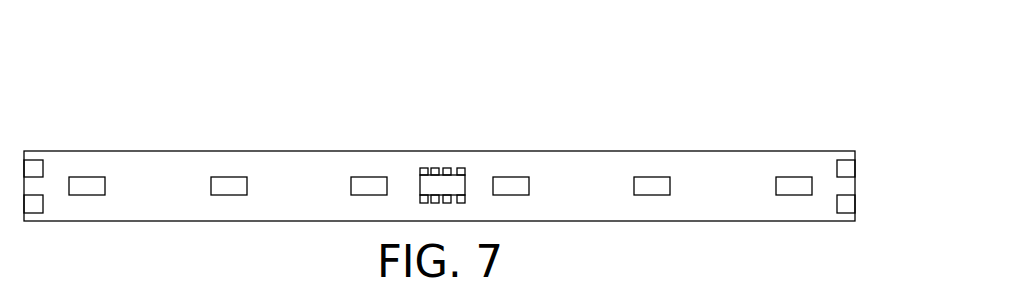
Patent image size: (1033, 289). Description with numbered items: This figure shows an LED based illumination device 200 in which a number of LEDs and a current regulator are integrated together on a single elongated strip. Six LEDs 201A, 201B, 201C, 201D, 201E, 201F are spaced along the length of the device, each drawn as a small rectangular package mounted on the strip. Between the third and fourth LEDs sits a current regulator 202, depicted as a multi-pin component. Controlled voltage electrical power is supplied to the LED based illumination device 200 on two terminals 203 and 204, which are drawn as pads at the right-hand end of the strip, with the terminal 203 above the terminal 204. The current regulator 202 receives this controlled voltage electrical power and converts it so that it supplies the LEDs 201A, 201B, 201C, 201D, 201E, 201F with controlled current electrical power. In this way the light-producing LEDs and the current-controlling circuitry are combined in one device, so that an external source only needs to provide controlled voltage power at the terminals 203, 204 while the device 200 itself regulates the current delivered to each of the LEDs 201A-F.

The LED based illumination device 200 is at (755, 68).
The LED 201A is at (88, 177).
The LED 201B is at (228, 177).
The LED 201C is at (371, 177).
The LED 201D is at (512, 177).
The LED 201E is at (652, 177).
The LED 201F is at (793, 177).
The current regulator 202 is at (440, 187).
The terminal 203 is at (845, 169).
The terminal 204 is at (845, 203).